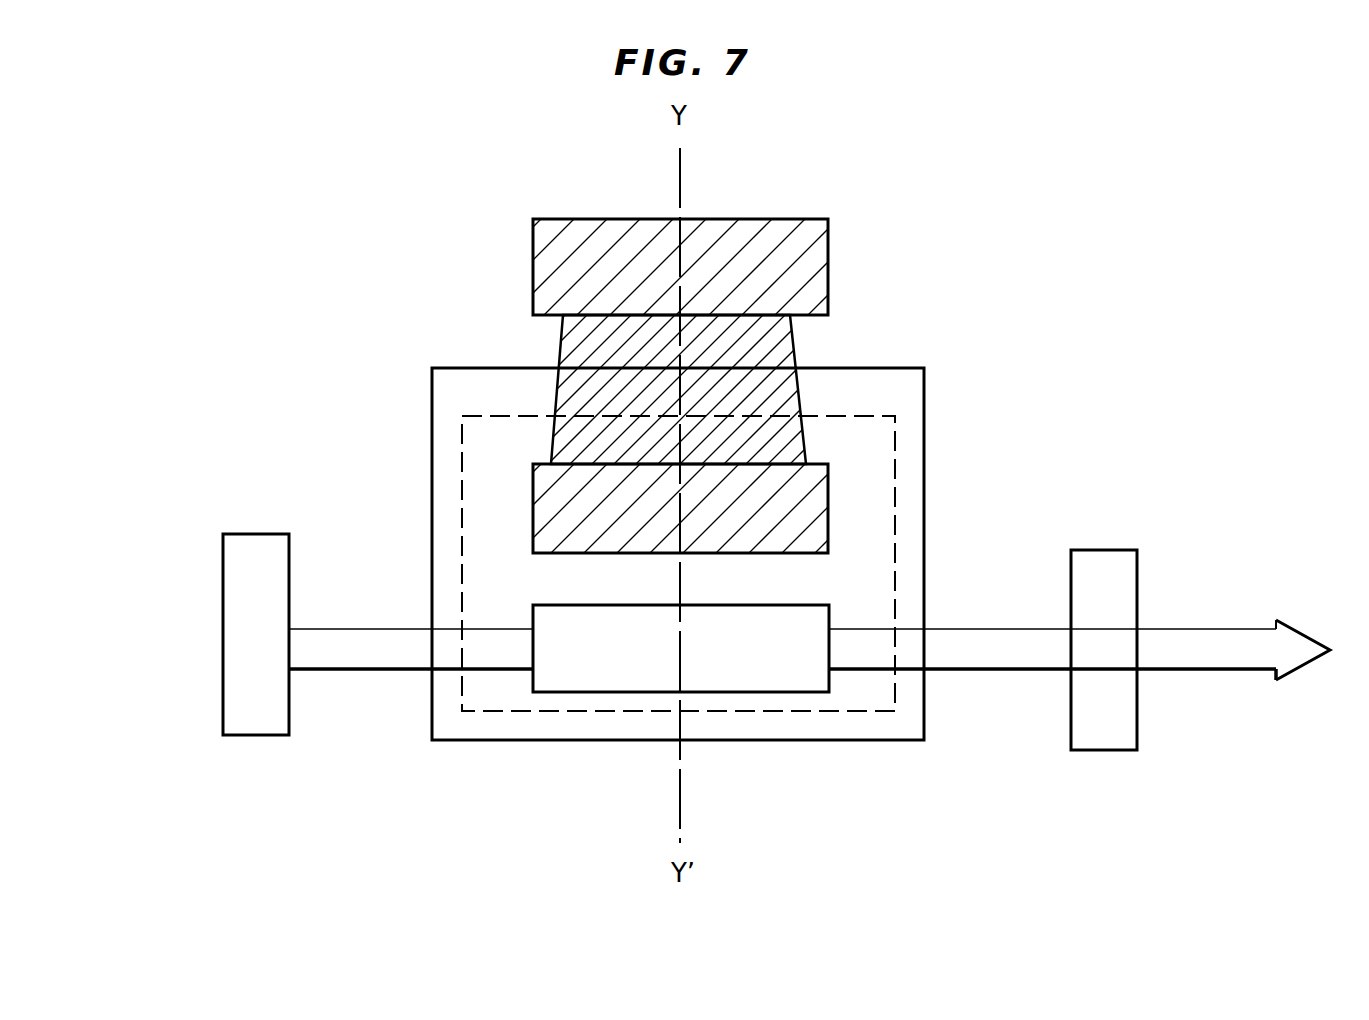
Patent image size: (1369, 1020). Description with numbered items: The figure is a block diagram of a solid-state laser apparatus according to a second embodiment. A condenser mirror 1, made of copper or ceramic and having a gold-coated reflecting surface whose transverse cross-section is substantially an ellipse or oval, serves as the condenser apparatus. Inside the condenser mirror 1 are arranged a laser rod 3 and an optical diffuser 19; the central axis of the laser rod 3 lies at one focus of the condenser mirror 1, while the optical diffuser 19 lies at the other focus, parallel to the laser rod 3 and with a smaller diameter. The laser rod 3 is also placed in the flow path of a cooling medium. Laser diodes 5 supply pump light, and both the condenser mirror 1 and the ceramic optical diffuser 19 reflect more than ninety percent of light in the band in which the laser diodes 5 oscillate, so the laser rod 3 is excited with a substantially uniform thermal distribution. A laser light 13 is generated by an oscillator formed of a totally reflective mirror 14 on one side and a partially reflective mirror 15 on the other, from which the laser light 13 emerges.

The condenser mirror 1 is at (911, 458).
The laser rod 3 is at (595, 673).
The laser diodes 5 is at (533, 261).
The optical diffuser 19 is at (533, 510).
The laser light 13 is at (1213, 655).
The totally reflective mirror 14 is at (223, 694).
The partially reflective mirror 15 is at (1124, 578).